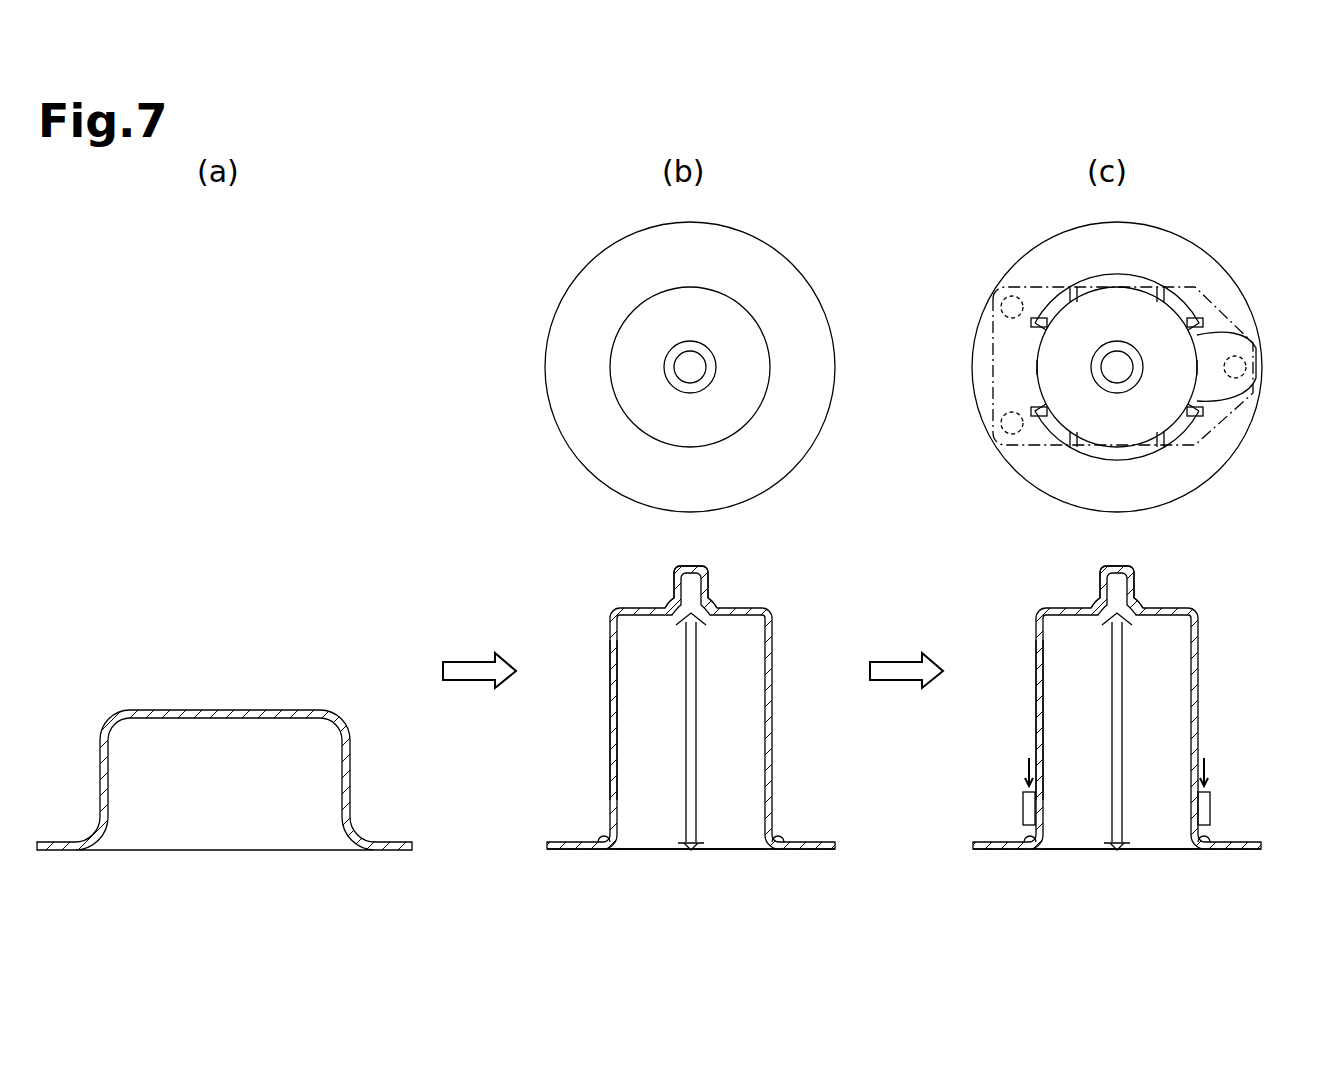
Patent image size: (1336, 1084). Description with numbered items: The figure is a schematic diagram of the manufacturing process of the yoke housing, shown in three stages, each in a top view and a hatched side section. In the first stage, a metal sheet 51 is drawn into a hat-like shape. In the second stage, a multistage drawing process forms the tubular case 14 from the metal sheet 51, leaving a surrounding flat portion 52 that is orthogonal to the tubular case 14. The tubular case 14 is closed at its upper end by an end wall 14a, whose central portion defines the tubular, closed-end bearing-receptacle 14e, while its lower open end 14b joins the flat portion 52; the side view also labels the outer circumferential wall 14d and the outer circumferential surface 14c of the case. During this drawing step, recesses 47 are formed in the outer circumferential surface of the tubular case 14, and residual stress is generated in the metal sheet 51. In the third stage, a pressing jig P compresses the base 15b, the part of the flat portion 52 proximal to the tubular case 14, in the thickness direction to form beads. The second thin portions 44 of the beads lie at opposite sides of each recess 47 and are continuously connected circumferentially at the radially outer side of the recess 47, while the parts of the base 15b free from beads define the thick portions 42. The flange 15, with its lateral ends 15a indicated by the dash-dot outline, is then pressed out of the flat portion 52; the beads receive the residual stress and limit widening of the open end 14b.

The metal sheet 51 is at (215, 710).
The flat portion 52 is at (760, 252).
The tubular case 14 is at (773, 364).
The end wall 14a is at (612, 366).
The open end 14b is at (740, 849).
The outer circumferential surface 14c is at (687, 341).
The outer circumferential wall 14d is at (786, 720).
The bearing-receptacle 14e is at (620, 416).
The flange 15 is at (993, 345).
The lateral end 15a is at (1027, 287).
The base 15b is at (1032, 360).
The thick portion 42 is at (1032, 368).
The second thin portion 44 is at (1135, 278).
The recess 47 is at (690, 287).
The pressing jig P is at (1023, 810).